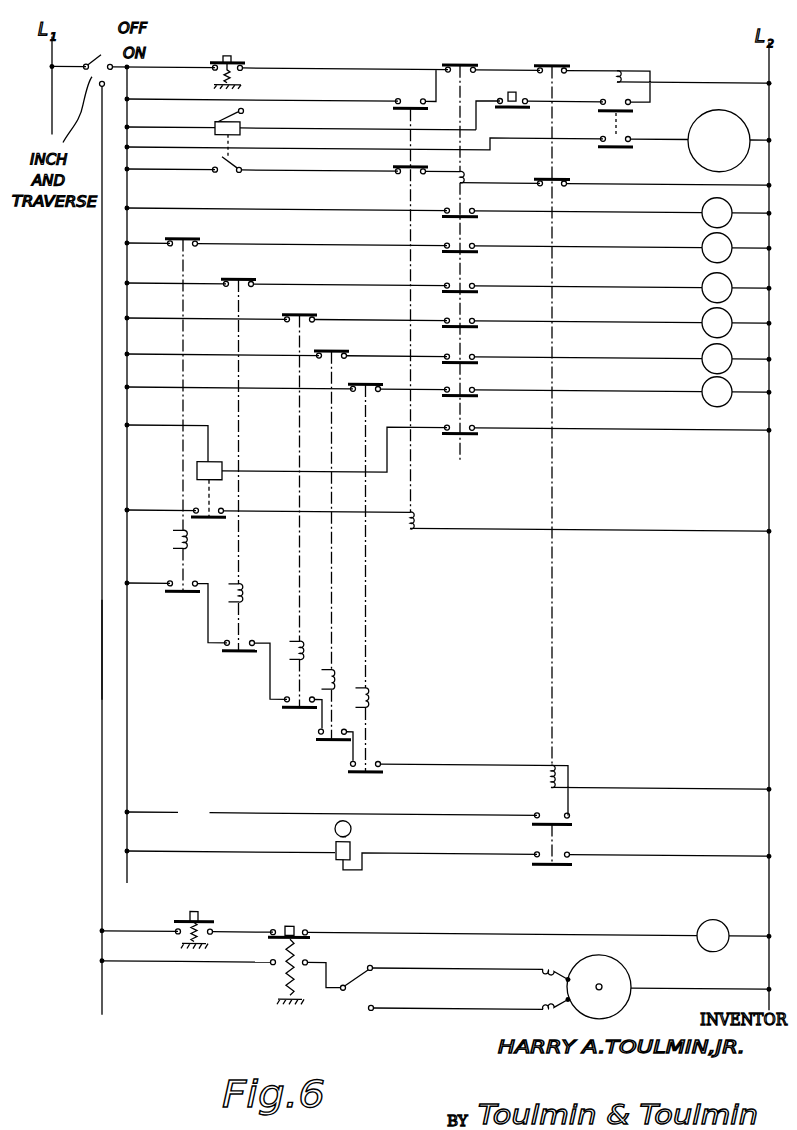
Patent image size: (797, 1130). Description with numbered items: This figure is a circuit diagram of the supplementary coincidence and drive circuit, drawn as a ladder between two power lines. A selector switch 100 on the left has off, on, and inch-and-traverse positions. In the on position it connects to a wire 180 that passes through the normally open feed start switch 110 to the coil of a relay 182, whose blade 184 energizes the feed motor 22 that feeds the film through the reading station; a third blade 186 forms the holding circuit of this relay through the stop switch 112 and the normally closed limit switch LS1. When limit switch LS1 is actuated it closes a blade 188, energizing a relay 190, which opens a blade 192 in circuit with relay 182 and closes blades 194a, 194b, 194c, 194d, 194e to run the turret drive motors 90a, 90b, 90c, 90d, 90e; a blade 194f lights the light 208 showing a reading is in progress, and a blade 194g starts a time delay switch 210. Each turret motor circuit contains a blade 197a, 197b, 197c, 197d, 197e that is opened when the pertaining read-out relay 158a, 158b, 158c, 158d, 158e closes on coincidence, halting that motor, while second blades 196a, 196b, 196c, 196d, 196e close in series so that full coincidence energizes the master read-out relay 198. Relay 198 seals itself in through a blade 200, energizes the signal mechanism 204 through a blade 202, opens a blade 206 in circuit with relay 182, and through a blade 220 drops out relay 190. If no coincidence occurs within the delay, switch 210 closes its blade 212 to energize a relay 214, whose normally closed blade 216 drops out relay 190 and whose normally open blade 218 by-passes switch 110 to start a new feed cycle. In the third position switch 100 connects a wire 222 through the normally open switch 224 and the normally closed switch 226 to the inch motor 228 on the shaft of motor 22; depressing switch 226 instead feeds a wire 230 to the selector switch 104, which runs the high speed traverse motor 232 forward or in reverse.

The selector switch 100 is at (95, 49).
The wire 180 is at (183, 66).
The feed start switch 110 is at (240, 60).
The limit switch LS1 is at (244, 118).
The blade 188 is at (219, 171).
The normally open blade 218 is at (418, 88).
The blade 192 is at (470, 63).
The stop switch 112 is at (506, 105).
The normally closed blade 216 is at (415, 162).
The relay 190 is at (464, 175).
The blade 206 is at (548, 64).
The relay 182 is at (618, 71).
The third blade 186 is at (621, 115).
The blade 184 is at (622, 146).
The blade 220 is at (555, 178).
The feed motor 22 is at (709, 145).
The light 208 is at (723, 203).
The drive motor 90a is at (703, 247).
The drive motor 90b is at (703, 287).
The drive motor 90c is at (703, 322).
The drive motor 90d is at (703, 358).
The drive motor 90e is at (703, 391).
The blade 197a is at (189, 239).
The blade 197b is at (240, 279).
The blade 197c is at (302, 314).
The blade 197d is at (332, 350).
The blade 197e is at (357, 385).
The blade 194a is at (474, 247).
The blade 194b is at (474, 287).
The blade 194c is at (474, 322).
The blade 194d is at (474, 358).
The blade 194e is at (474, 391).
The blade 194f is at (474, 212).
The blade 194g is at (474, 429).
The time delay switch 210 is at (223, 464).
The blade 212 is at (224, 508).
The relay 214 is at (416, 518).
The read-out relay 158a is at (186, 542).
The read-out relay 158b is at (242, 591).
The read-out relay 158c is at (299, 643).
The read-out relay 158d is at (330, 678).
The read-out relay 158e is at (367, 695).
The second blade 196a is at (169, 592).
The second blade 196b is at (222, 651).
The second blade 196c is at (282, 708).
The second blade 196d is at (316, 741).
The second blade 196e is at (361, 772).
The master read-out relay 198 is at (553, 770).
The blade 200 is at (573, 826).
The second blade 202 is at (556, 864).
The signal mechanism 204 is at (353, 828).
The normally open switch 224 is at (198, 920).
The normally closed switch 226 is at (296, 926).
The selector switch 104 is at (352, 972).
The wire 230 is at (188, 962).
The inch motor 228 is at (706, 930).
The high speed traverse motor 232 is at (614, 970).
The wire 222 is at (101, 645).